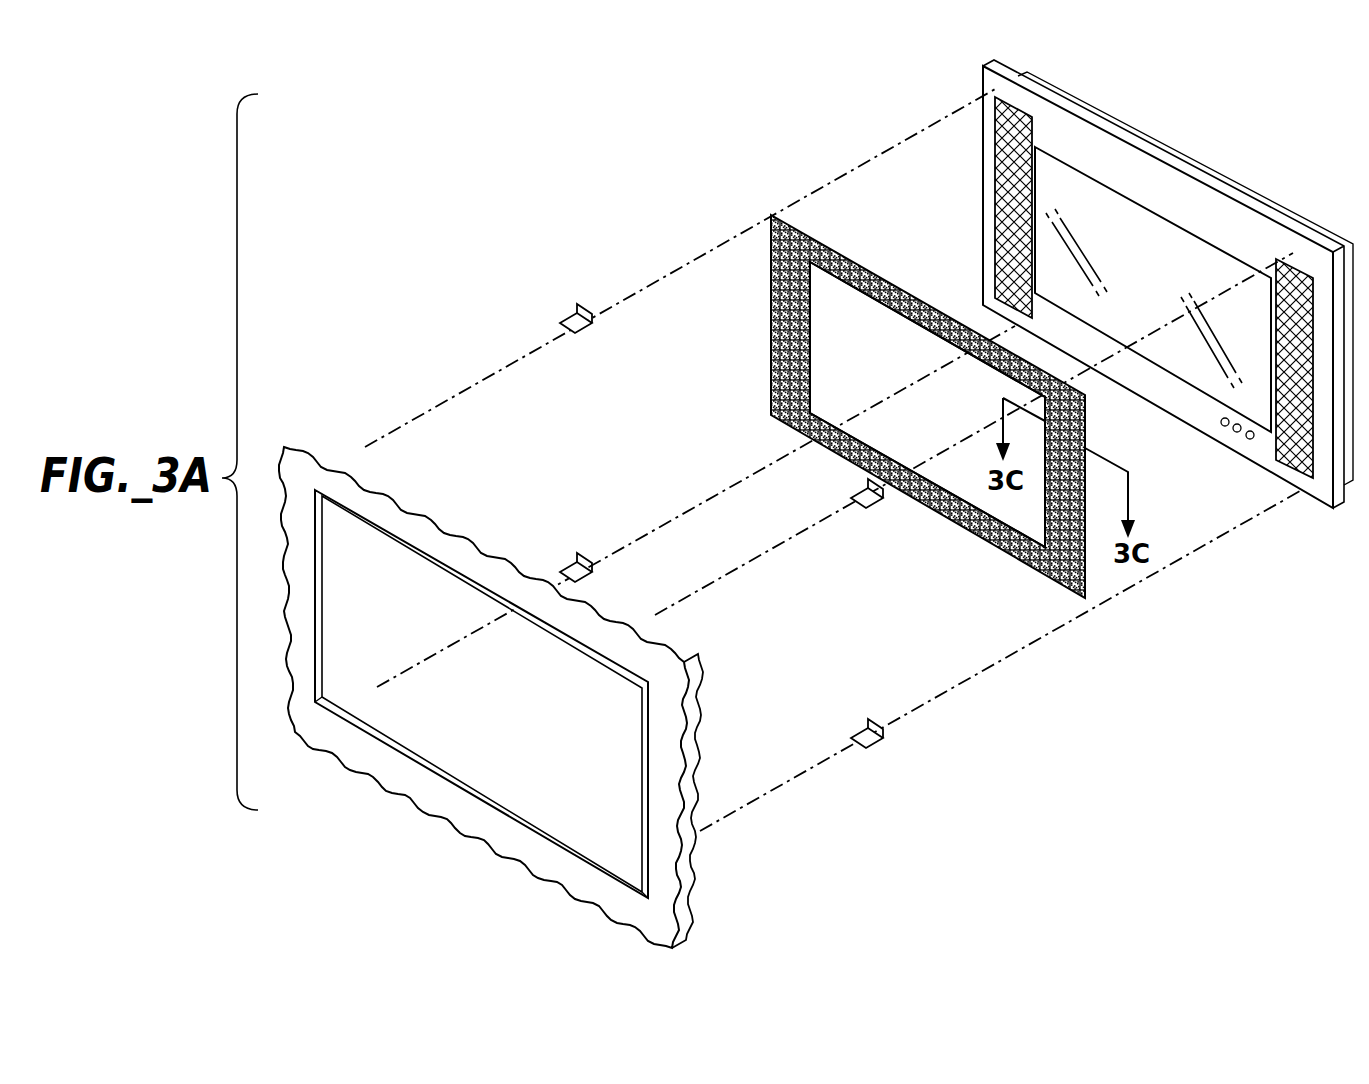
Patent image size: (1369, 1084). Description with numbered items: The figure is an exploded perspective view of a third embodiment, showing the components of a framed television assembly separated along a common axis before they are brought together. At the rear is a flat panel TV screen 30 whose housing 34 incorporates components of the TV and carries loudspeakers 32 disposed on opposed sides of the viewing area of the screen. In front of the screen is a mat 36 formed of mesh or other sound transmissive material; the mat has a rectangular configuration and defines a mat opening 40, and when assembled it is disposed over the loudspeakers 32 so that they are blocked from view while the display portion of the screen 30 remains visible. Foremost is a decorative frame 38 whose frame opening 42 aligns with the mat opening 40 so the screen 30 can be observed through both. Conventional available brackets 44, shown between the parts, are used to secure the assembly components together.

The flat panel TV screen 30 is at (1141, 284).
The loudspeakers 32 is at (996, 240).
The housing 34 is at (1190, 205).
The mat 36 is at (895, 406).
The frame 38 is at (491, 697).
The mat opening 40 is at (810, 317).
The frame opening 42 is at (455, 772).
The brackets 44 is at (577, 313).